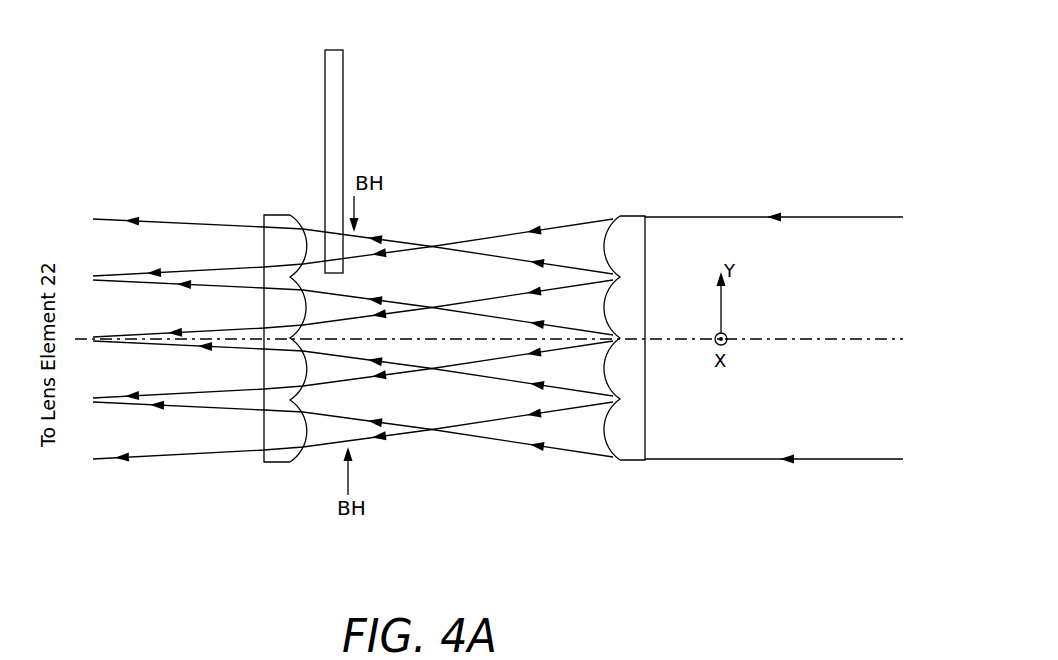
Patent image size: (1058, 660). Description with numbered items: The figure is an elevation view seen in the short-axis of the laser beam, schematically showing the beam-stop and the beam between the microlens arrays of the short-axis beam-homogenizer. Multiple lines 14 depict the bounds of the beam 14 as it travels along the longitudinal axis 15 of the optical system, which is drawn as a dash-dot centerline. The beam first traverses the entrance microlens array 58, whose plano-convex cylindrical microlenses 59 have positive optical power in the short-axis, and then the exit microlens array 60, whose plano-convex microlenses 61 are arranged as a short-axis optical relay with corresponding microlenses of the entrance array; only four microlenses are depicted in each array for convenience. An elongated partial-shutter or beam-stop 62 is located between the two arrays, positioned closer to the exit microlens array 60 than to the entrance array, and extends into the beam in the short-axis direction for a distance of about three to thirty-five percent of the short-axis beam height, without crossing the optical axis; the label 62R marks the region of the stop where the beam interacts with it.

The beam 14 is at (805, 217).
The longitudinal axis 15 is at (835, 339).
The microlens array 58 is at (639, 202).
The plano-convex cylindrical microlenses 59 is at (605, 375).
The microlens array 60 is at (274, 210).
The plano-convex microlenses 61 is at (303, 370).
The beam-stop 62 is at (352, 139).
The reflective region 62R is at (330, 236).